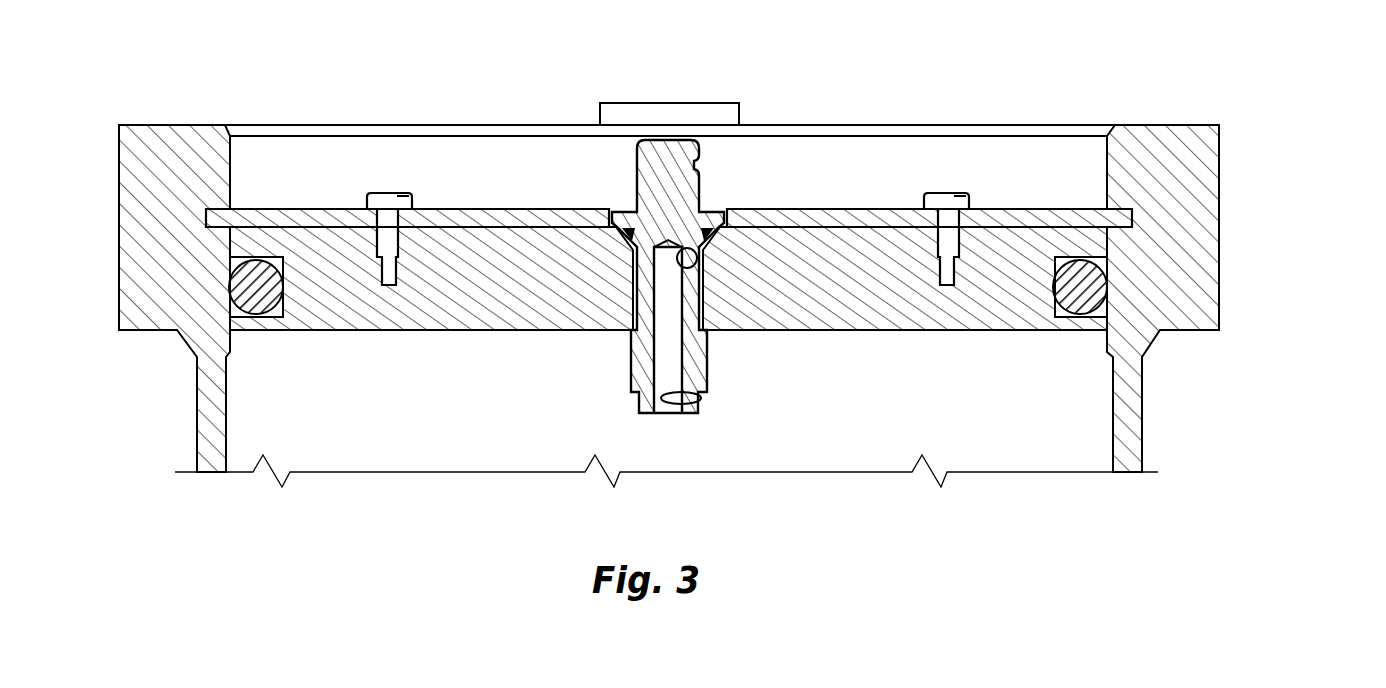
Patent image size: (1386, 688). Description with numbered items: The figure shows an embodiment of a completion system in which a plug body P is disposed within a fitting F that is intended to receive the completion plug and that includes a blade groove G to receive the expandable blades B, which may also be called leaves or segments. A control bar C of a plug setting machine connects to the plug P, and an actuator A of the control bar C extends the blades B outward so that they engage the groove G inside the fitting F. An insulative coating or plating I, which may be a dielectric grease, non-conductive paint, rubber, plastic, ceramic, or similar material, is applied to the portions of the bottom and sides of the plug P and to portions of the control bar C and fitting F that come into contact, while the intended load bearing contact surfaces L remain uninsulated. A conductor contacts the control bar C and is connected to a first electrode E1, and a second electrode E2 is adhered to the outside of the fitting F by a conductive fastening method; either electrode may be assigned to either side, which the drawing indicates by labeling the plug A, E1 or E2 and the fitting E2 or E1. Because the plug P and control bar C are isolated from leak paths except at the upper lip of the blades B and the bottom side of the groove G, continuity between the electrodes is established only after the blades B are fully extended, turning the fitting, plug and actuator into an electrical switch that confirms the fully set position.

The actuator A is at (823, 238).
The blades B is at (295, 210).
The control bar C is at (655, 102).
The first electrode E1 is at (678, 160).
The second electrode E2 is at (1152, 127).
The fitting F is at (178, 124).
The blade groove G is at (1120, 253).
The insulative coating or plating I is at (410, 333).
The load bearing contact surface L is at (638, 183).
The plug body P is at (782, 332).